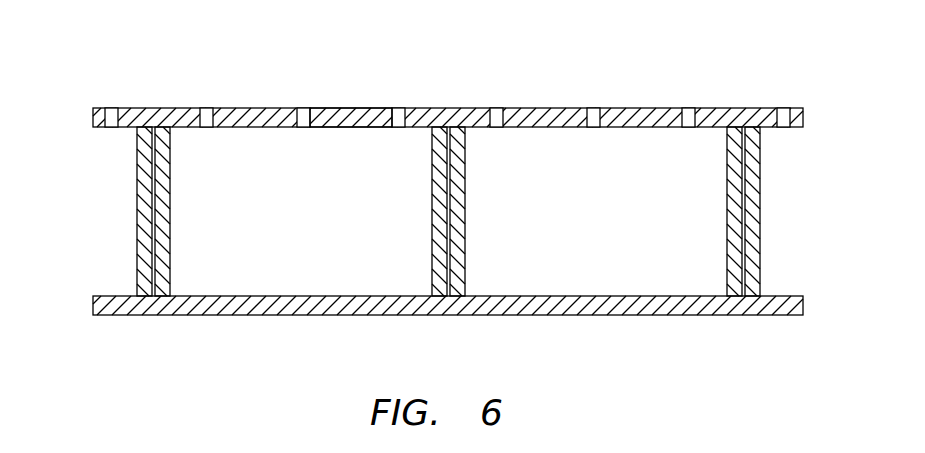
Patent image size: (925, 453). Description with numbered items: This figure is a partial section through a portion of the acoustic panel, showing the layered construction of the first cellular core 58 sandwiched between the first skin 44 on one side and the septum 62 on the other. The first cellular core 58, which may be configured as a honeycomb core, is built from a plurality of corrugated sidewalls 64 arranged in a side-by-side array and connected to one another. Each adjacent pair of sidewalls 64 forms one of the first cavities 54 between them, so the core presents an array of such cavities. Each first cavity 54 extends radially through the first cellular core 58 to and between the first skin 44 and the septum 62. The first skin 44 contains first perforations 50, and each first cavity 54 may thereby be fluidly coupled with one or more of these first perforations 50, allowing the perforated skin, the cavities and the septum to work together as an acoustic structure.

The first skin 44 is at (122, 103).
The first perforations 50 is at (395, 108).
The first cavities 54 is at (278, 187).
The first cellular core 58 is at (80, 125).
The septum 62 is at (147, 317).
The corrugated sidewalls 64 is at (171, 260).